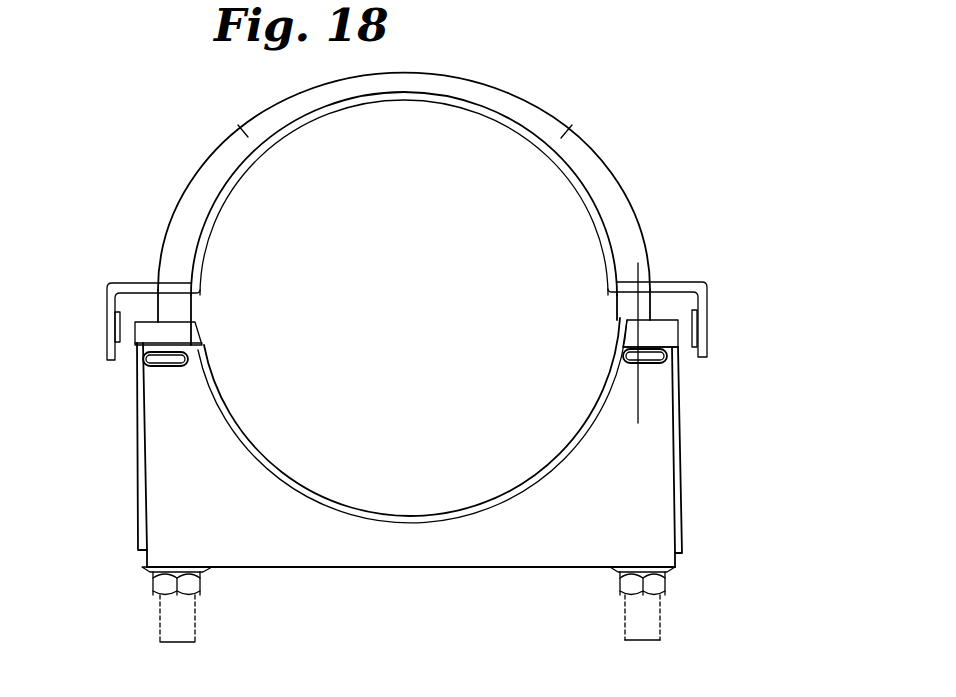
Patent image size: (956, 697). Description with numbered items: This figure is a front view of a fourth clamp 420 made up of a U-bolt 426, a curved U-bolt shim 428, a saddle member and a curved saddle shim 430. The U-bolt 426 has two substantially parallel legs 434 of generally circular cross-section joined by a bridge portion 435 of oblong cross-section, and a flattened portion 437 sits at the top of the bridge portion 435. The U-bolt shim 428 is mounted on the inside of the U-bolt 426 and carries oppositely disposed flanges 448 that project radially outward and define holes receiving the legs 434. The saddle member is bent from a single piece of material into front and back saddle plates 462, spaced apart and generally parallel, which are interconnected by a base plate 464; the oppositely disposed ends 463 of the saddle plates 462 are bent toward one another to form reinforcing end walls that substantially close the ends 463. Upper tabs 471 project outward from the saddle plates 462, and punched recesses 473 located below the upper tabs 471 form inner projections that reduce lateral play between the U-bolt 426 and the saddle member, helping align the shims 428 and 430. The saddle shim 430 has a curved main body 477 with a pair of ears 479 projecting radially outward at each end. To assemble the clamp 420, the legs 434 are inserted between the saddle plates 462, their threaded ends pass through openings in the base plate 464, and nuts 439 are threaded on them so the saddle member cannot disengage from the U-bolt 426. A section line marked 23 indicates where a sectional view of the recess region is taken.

The clamp 420 is at (667, 174).
The U-bolt 426 is at (596, 150).
The flattened portion 437 is at (418, 73).
The bridge portion 435 is at (522, 99).
The U-bolt shim 428 is at (357, 103).
The flanges 448 is at (128, 285).
The upper tabs 471 is at (145, 337).
The ears 479 is at (195, 339).
The punched recesses 473 is at (170, 368).
The ends 463 is at (133, 487).
The curved main body 477 is at (261, 449).
The saddle shim 430 is at (340, 503).
The saddle plates 462 is at (592, 545).
The base plate 464 is at (452, 567).
The nuts 439 is at (667, 578).
The legs 434 is at (158, 620).
The section line 23- 23 is at (638, 263).